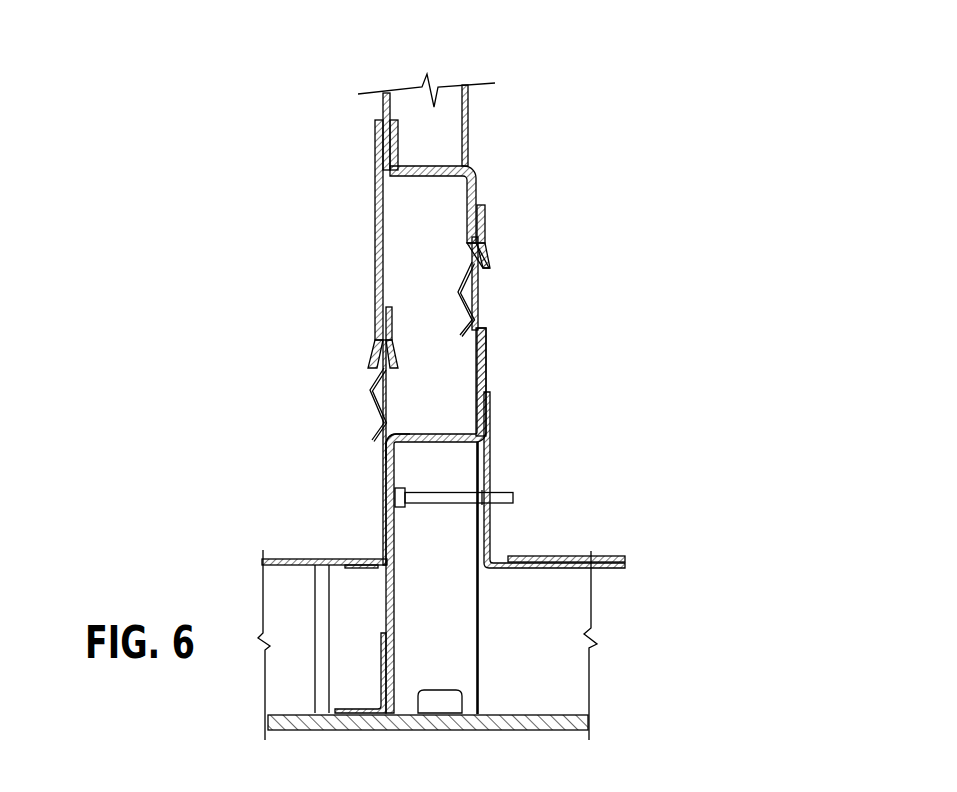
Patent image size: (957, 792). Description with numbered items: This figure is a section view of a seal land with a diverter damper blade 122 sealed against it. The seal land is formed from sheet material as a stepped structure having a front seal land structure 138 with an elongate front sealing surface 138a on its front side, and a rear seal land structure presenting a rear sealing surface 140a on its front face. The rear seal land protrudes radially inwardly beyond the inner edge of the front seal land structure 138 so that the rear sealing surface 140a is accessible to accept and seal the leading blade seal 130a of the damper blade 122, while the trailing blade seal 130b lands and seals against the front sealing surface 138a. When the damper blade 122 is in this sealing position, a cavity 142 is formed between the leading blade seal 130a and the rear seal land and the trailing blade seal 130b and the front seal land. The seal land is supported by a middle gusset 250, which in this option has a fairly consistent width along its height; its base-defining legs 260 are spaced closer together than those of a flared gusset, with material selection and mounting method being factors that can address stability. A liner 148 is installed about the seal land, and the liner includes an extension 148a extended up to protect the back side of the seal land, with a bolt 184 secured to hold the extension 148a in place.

The diverter damper blade 122 is at (486, 174).
The leading blade seal 130a is at (458, 297).
The trailing blade seal 130b is at (370, 388).
The cavity 142 is at (480, 328).
The rear sealing surface 140a is at (445, 351).
The front seal land structure 138 is at (385, 520).
The front sealing surface 138a is at (385, 470).
The middle gusset 250 is at (479, 537).
The bolt 184 is at (514, 497).
The liner extension 148a is at (492, 552).
The liner 148 is at (290, 560).
The legs 260 is at (403, 698).